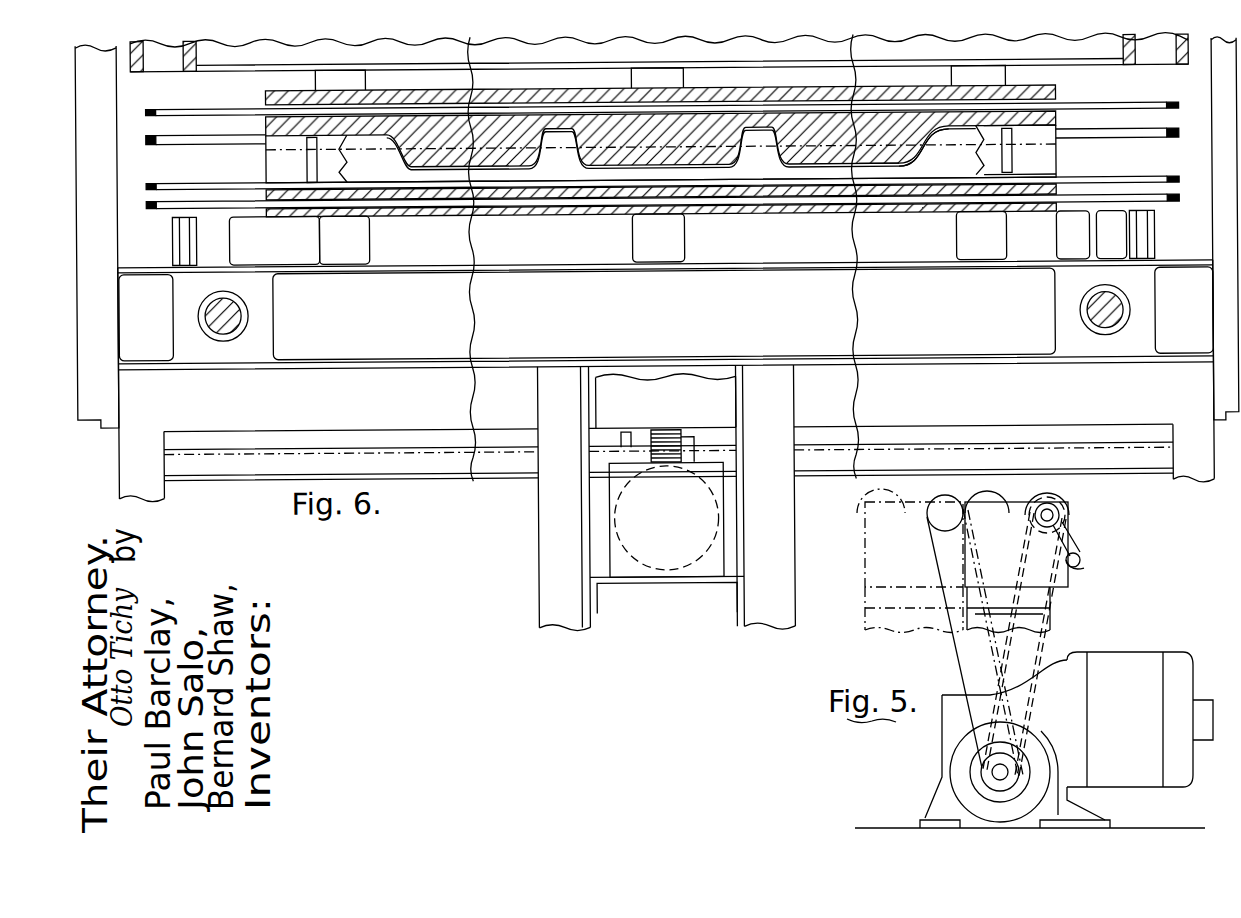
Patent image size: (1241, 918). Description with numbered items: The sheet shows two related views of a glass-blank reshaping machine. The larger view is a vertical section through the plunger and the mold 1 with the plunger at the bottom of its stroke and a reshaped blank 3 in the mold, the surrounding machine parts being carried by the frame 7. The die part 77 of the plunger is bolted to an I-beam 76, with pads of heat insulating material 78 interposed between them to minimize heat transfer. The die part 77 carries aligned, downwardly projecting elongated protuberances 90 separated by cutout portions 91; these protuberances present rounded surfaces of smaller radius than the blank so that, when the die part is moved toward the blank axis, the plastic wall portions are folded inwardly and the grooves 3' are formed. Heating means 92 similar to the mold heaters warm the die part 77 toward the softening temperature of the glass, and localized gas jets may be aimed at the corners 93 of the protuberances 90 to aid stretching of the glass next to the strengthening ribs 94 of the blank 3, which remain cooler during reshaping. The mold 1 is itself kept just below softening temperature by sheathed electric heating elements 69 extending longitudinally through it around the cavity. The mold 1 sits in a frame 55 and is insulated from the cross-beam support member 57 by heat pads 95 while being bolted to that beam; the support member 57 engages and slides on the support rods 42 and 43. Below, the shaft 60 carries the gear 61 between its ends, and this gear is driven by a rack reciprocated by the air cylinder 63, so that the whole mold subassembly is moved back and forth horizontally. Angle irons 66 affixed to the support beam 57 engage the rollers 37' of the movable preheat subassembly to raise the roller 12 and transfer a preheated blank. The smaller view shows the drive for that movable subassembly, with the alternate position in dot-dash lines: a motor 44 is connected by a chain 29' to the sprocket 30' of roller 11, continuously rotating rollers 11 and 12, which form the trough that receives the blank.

In FIG. 6, the mold 1 is at (1060, 181).
In FIG. 6, the blank 3 is at (1030, 150).
In FIG. 6, the grooves 3' is at (941, 151).
In FIG. 6, the frame 7 is at (100, 424).
In FIG. 5, the roller 11 is at (1057, 497).
In FIG. 5, the roller 12 is at (985, 496).
In FIG. 5, the chain 29' is at (1090, 537).
In FIG. 5, the sprocket 30' is at (1080, 508).
In FIG. 5, the roller 37' is at (1100, 568).
In FIG. 6, the support rod 42 is at (198, 313).
In FIG. 6, the support rod 43 is at (1130, 311).
In FIG. 5, the motor 44 is at (1122, 648).
In FIG. 6, the frame 55 is at (1097, 244).
In FIG. 6, the cross-beam support member 57 is at (1165, 266).
In FIG. 6, the shaft 60 is at (507, 478).
In FIG. 6, the gear 61 is at (672, 432).
In FIG. 6, the air cylinder 63 is at (693, 570).
In FIG. 6, the angle irons 66 is at (173, 238).
In FIG. 6, the sheathed electric heating elements 69 is at (1165, 192).
In FIG. 6, the I-beam 76 is at (1120, 62).
In FIG. 6, the die part 77 is at (1057, 92).
In FIG. 6, the heat insulating pads 78 is at (1005, 84).
In FIG. 6, the protuberances 90 is at (908, 165).
In FIG. 6, the cutout portions 91 is at (767, 130).
In FIG. 6, the heating means 92 is at (1168, 106).
In FIG. 6, the corners 93 is at (723, 152).
In FIG. 6, the strengthening ribs 94 is at (757, 134).
In FIG. 6, the heat pads 95 is at (365, 246).